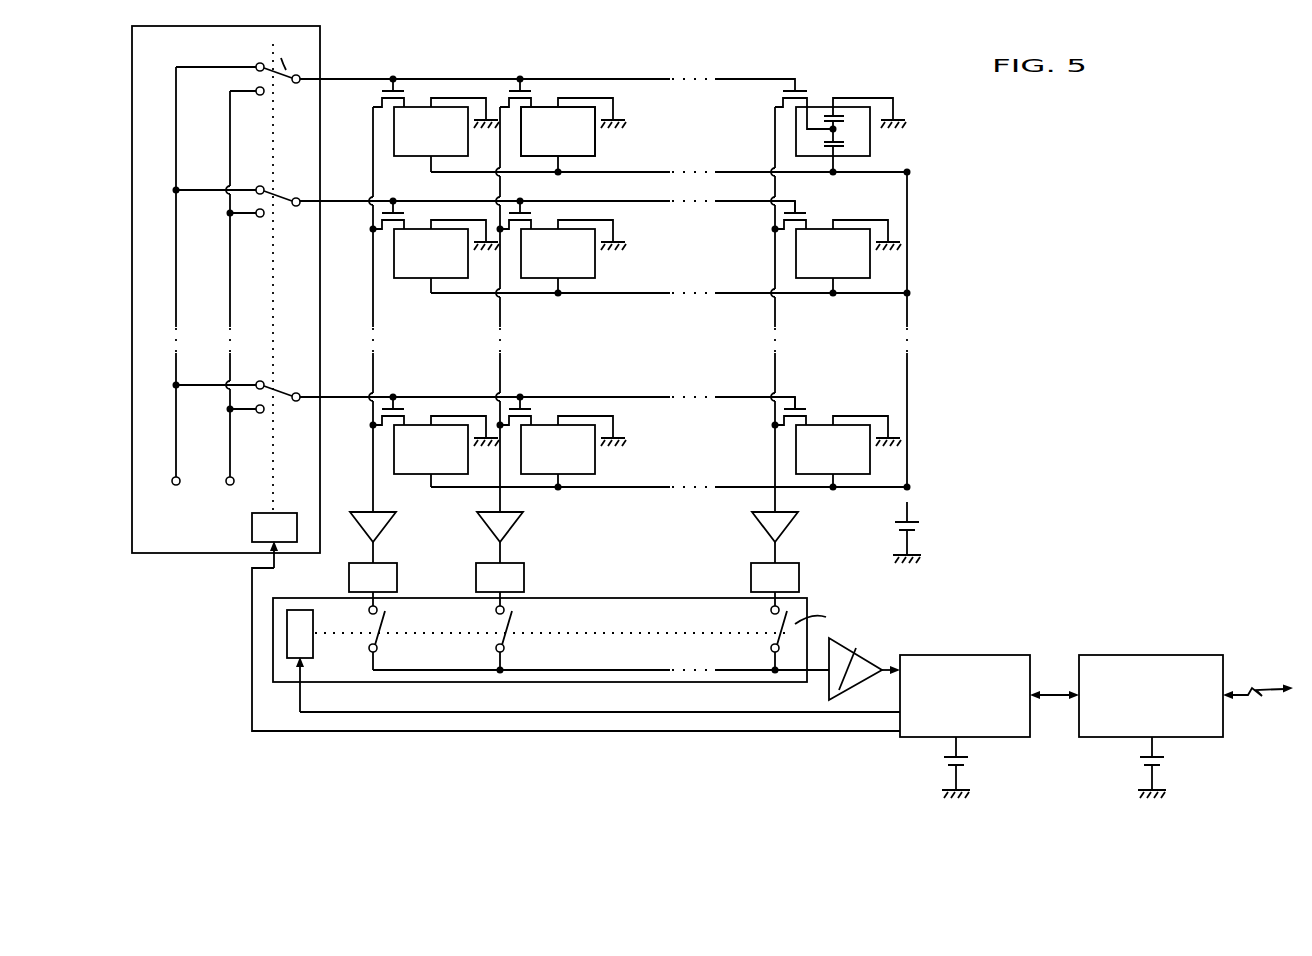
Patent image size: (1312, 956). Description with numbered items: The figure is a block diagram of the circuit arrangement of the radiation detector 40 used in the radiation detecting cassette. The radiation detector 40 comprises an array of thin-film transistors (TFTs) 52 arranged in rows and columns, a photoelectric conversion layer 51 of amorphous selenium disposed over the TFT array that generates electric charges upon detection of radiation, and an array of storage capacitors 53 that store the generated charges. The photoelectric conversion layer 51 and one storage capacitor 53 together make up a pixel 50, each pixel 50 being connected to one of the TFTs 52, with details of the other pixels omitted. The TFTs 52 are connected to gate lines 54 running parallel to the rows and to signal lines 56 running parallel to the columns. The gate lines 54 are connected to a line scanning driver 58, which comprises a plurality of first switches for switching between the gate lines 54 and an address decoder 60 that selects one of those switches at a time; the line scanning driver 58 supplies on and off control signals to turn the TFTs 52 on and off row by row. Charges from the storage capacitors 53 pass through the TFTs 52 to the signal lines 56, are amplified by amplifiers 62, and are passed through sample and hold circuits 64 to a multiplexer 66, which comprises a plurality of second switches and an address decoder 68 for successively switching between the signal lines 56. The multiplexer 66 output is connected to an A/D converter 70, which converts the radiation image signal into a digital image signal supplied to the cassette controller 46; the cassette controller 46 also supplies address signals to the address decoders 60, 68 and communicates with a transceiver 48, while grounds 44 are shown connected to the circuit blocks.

The radiation detector 40 is at (789, 49).
The ground 44 is at (917, 516).
The cassette controller 46 is at (1009, 655).
The transceiver 48 is at (1197, 655).
The pixel 50 is at (597, 149).
The photoelectric conversion layer 51 is at (845, 142).
The thin-film transistor 52 is at (784, 93).
The storage capacitor 53 is at (846, 117).
The gate line 54 is at (745, 77).
The signal line 56 is at (775, 131).
The line scanning driver 58 is at (132, 67).
The address decoder 60 is at (250, 526).
The amplifier 62 is at (520, 526).
The sample and hold circuit 64 is at (525, 578).
The multiplexer 66 is at (662, 596).
The address decoder 68 is at (313, 643).
The A/D converter 70 is at (869, 658).